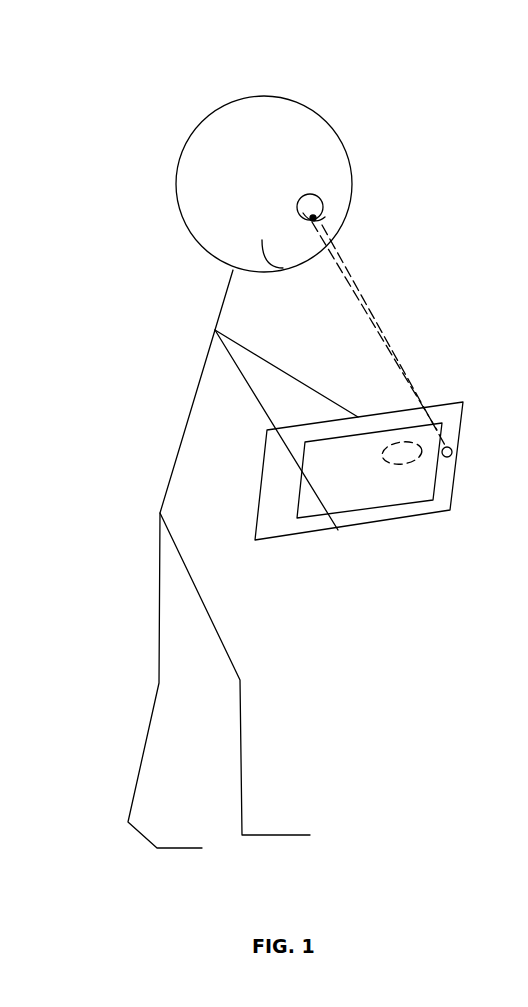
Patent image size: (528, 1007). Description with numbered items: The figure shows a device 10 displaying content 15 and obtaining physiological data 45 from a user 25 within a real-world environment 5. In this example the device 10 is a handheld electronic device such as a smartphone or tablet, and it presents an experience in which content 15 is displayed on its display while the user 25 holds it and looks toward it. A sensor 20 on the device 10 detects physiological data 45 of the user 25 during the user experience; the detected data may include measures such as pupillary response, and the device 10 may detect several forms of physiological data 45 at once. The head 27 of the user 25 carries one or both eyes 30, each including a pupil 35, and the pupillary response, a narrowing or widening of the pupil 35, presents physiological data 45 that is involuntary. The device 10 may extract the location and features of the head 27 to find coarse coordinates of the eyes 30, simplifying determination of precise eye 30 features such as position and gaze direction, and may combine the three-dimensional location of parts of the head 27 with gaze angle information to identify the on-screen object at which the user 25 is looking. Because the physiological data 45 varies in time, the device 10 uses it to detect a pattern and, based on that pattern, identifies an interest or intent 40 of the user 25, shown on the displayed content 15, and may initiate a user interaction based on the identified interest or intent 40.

The real-world environment 5 is at (107, 101).
The device 10 is at (410, 519).
The content 15 is at (347, 473).
The sensor 20 is at (455, 452).
The user 25 is at (192, 400).
The head 27 is at (250, 97).
The eye 30 is at (300, 196).
The pupil 35 is at (325, 217).
The interest or intent 40 is at (394, 464).
The physiological data 45 is at (398, 357).